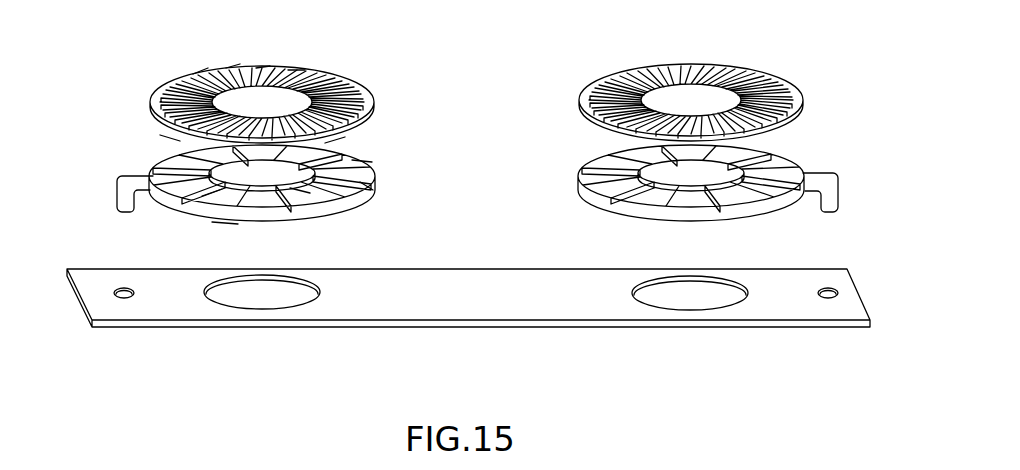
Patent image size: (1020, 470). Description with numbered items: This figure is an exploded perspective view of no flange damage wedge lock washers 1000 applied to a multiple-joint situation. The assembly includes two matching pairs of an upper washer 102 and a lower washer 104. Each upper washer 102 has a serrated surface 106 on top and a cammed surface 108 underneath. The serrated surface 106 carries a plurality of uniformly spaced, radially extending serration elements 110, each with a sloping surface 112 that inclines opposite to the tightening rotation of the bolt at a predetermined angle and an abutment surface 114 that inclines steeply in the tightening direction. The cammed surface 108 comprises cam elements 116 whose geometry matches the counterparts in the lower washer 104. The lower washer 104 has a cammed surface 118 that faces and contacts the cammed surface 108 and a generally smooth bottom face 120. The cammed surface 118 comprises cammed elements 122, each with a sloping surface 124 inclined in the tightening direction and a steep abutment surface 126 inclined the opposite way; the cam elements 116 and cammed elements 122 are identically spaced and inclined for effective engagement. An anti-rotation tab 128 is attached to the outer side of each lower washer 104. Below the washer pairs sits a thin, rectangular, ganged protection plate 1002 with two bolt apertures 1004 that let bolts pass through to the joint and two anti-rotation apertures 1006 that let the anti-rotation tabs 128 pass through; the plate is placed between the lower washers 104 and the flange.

The no flange damage wedge lock washers 1000 is at (137, 60).
The upper washer 102 is at (155, 118).
The lower washer 104 is at (248, 208).
The serrated surface 106 is at (197, 72).
The cammed surface 108 is at (167, 138).
The serration elements 110 is at (230, 67).
The sloping surface 112 is at (260, 67).
The abutment surface 114 is at (293, 68).
The cam elements 116 is at (333, 145).
The cammed surface 118 is at (360, 160).
The bottom face 120 is at (225, 220).
The cammed elements 122 is at (365, 185).
The sloping surface 124 is at (298, 190).
The abutment surface 126 is at (210, 192).
The anti-rotation tab 128 is at (122, 200).
The ganged protection plate 1002 is at (434, 302).
The bolt apertures 1004 is at (270, 300).
The anti-rotation apertures 1006 is at (124, 298).